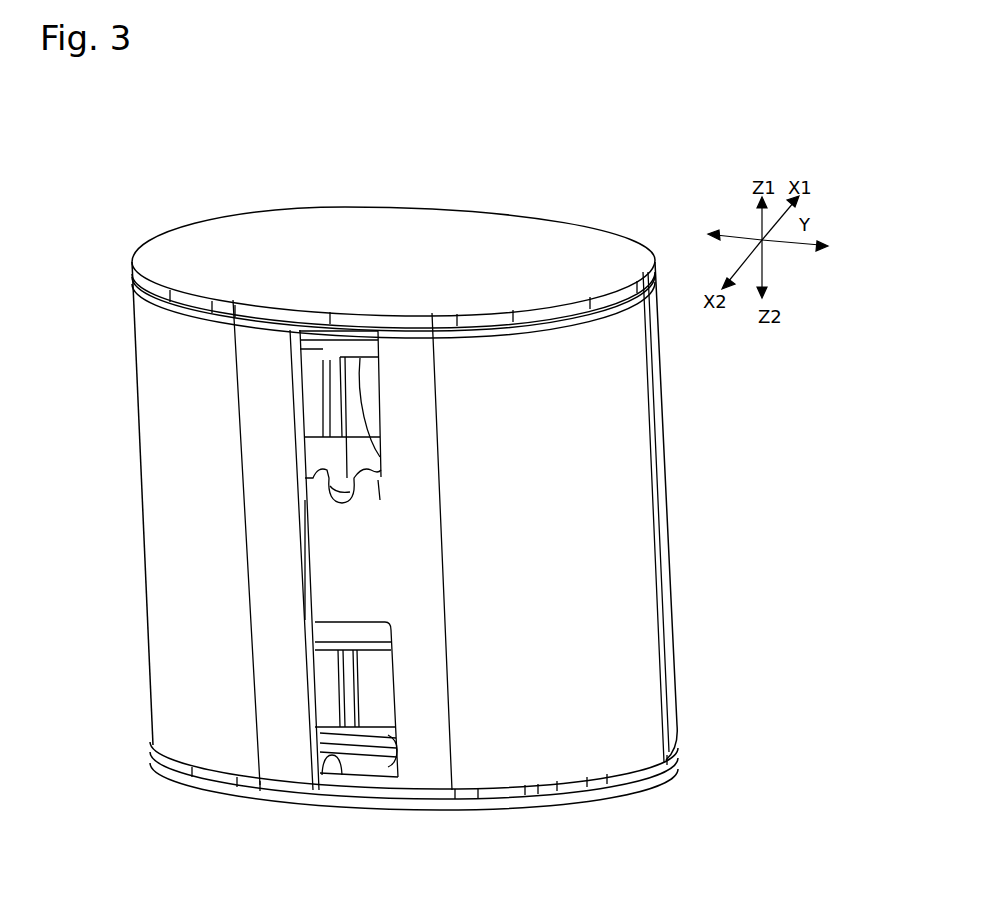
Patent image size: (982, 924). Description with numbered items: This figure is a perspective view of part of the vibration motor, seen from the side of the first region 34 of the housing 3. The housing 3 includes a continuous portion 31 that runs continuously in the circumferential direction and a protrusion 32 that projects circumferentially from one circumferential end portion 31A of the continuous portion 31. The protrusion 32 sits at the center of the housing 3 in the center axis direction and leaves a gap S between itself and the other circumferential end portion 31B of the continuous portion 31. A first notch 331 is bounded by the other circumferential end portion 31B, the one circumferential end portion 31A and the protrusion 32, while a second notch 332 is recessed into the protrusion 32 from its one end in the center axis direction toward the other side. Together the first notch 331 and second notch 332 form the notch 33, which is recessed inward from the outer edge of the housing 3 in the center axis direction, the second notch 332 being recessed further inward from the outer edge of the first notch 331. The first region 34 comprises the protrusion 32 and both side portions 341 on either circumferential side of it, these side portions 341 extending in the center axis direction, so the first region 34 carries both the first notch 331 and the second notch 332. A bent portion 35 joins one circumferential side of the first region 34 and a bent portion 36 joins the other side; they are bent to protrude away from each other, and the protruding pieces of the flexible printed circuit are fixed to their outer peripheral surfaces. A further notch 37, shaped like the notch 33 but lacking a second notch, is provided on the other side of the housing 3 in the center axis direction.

The housing 3 is at (473, 508).
The continuous portion 31 is at (613, 508).
The protrusion 32 is at (365, 553).
The notch 33 is at (349, 300).
The first notch 331 is at (358, 380).
The second notch 332 is at (338, 437).
The first region 34 is at (295, 757).
The both side portions 341 is at (413, 653).
The bent portion 35 is at (172, 633).
The bent portion 36 is at (542, 767).
The notch 37 is at (320, 742).
The one circumferential end portion 31A is at (378, 738).
The other circumferential end portion 31B is at (341, 762).
The gap S is at (300, 523).